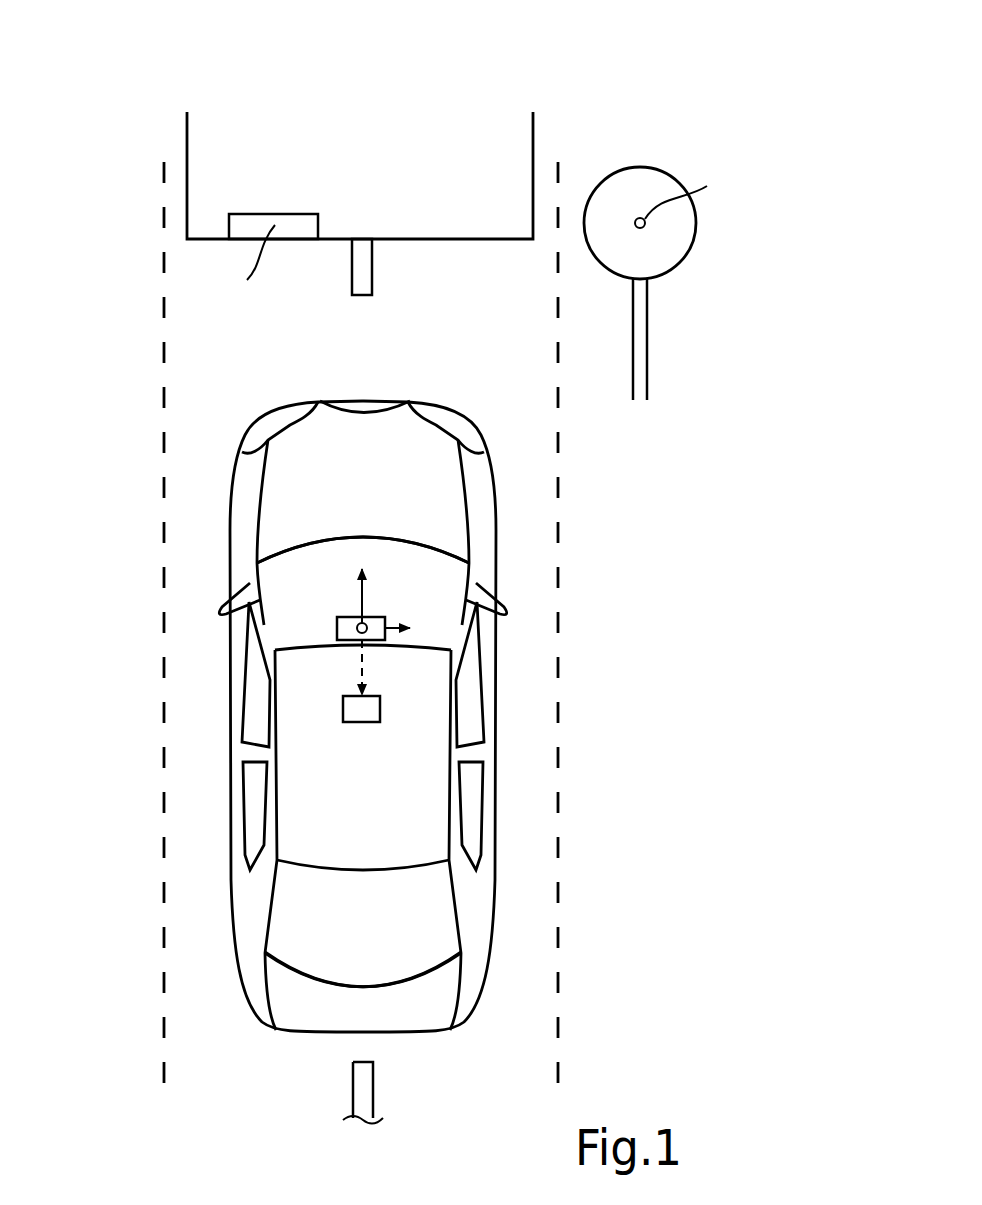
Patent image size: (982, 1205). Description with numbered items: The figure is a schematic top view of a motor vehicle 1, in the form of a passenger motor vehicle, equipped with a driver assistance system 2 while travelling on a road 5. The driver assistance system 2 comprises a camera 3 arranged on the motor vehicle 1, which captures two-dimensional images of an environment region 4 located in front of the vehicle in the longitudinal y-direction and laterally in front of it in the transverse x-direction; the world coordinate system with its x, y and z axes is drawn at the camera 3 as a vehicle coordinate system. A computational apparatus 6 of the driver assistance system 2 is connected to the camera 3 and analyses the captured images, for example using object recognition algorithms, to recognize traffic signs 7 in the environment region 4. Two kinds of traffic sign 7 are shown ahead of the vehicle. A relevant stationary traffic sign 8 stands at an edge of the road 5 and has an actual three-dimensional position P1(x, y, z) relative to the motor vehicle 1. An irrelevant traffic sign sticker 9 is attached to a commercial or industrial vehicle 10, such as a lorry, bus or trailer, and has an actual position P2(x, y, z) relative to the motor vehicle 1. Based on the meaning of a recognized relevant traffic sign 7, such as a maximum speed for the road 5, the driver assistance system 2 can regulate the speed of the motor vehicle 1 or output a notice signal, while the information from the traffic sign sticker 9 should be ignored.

The motor vehicle 1 is at (313, 1033).
The driver assistance system 2 is at (420, 712).
The camera 3 is at (383, 641).
The environment region 4 is at (90, 553).
The road 5 is at (193, 345).
The computational apparatus 6 is at (360, 722).
The traffic sign 7 is at (259, 212).
The stationary traffic sign 8 is at (696, 247).
The traffic sign sticker 9 is at (298, 214).
The commercial or industrial vehicle 10 is at (533, 118).